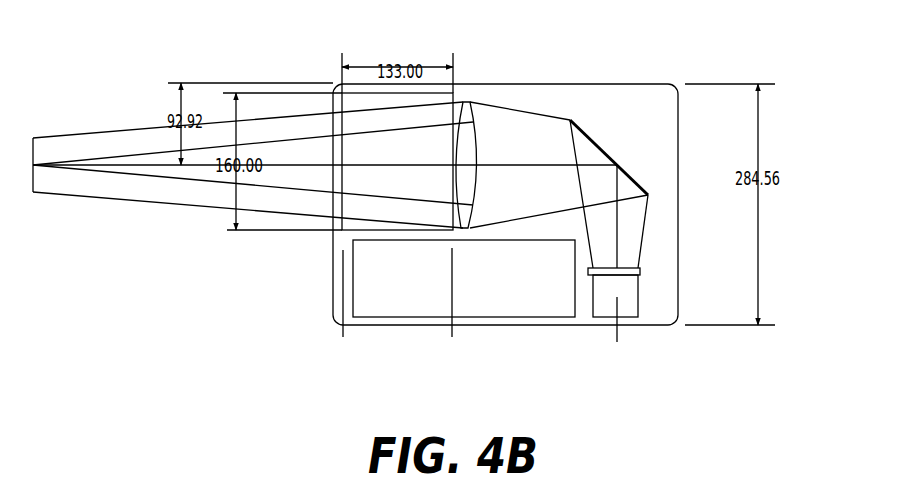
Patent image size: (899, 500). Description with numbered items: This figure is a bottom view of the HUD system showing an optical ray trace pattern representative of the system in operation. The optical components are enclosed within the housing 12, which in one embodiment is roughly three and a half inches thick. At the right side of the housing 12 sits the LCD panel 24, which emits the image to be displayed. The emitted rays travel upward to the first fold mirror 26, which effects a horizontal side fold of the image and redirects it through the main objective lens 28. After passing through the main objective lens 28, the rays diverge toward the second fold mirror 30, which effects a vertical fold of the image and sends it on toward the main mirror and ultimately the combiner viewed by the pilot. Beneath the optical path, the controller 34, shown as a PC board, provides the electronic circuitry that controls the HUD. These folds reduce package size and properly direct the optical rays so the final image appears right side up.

The housing 12 is at (538, 84).
The LCD panel 24 is at (640, 268).
The first fold mirror 26 is at (632, 177).
The main objective lens 28 is at (455, 195).
The second fold mirror 30 is at (362, 210).
The controller 34 is at (507, 307).